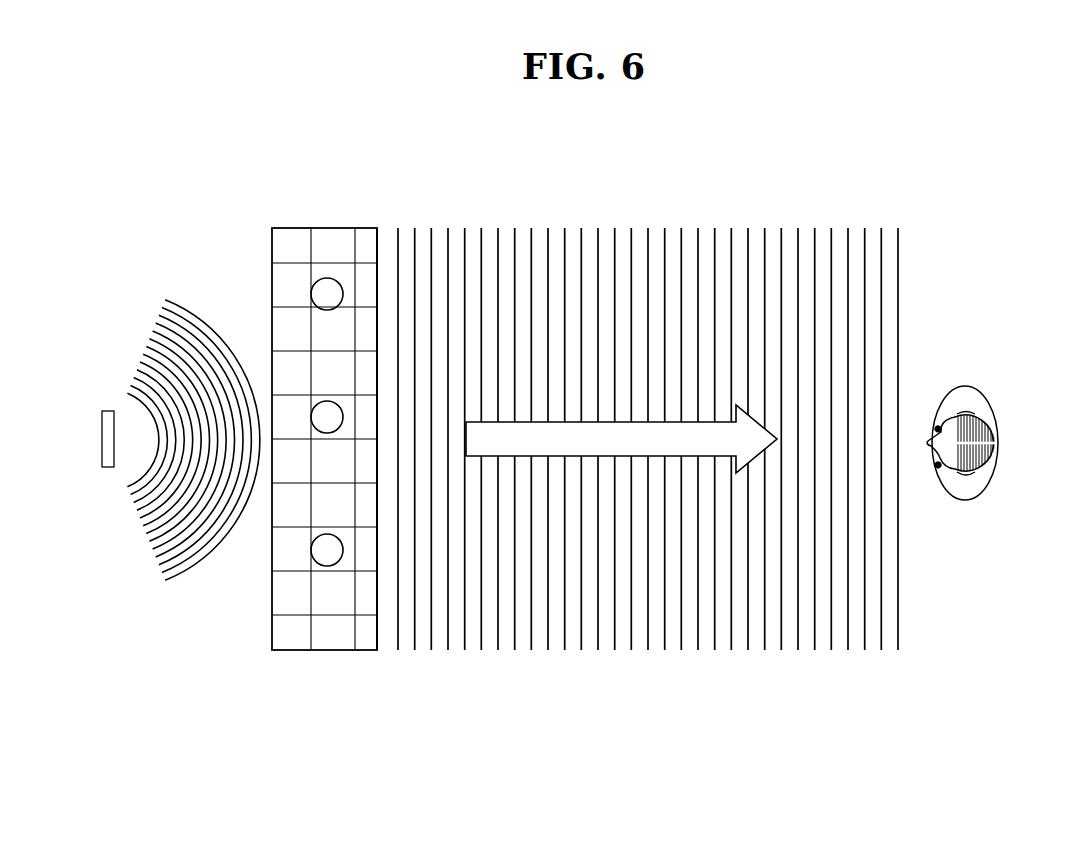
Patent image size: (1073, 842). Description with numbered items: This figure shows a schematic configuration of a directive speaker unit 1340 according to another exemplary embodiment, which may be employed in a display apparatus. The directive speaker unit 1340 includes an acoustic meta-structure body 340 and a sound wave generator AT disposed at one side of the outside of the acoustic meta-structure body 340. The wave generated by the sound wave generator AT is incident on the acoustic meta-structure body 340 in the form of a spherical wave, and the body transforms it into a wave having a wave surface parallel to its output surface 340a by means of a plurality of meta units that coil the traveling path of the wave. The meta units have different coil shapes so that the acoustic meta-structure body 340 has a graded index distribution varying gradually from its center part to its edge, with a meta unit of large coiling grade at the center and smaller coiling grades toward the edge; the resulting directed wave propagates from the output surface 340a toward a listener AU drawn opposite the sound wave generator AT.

The directive speaker unit 1340 is at (208, 172).
The acoustic meta-structure body 340 is at (332, 240).
The output surface 340a is at (377, 242).
The sound wave generator AT is at (102, 440).
The user / listener AU is at (983, 443).